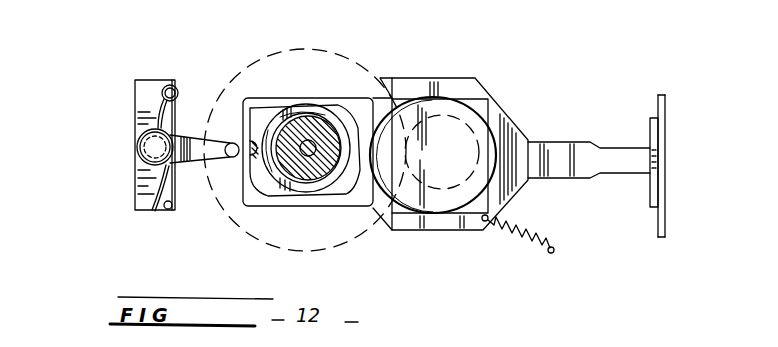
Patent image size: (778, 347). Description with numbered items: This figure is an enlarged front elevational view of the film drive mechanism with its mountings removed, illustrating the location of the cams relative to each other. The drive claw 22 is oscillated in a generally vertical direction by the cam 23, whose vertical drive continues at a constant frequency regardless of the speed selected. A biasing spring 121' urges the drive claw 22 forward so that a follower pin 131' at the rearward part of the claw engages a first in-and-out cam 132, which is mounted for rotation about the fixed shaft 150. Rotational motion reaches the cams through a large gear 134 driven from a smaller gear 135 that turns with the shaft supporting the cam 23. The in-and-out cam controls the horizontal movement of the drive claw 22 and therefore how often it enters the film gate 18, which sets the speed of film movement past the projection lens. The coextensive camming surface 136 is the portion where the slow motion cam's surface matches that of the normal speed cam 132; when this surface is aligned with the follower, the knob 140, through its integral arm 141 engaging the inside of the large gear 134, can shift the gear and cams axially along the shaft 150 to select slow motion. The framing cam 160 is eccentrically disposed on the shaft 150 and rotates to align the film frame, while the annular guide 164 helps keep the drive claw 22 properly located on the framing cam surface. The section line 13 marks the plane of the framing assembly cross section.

The section line 13- 13 is at (80, 148).
The film gate 18 is at (668, 182).
The drive claw 22 is at (457, 220).
The cam 23 is at (467, 117).
The biasing spring 121' is at (539, 234).
The follower pin 131' is at (203, 219).
The first in-and-out cam 132 is at (358, 100).
The large gear 134 is at (318, 66).
The smaller gear 135 is at (513, 121).
The coextensive camming surface 136 is at (313, 193).
The knob 140 is at (136, 156).
The arm 141 is at (205, 143).
The shaft 150 is at (290, 193).
The cam 160 is at (307, 193).
The annular guide 164 is at (310, 120).